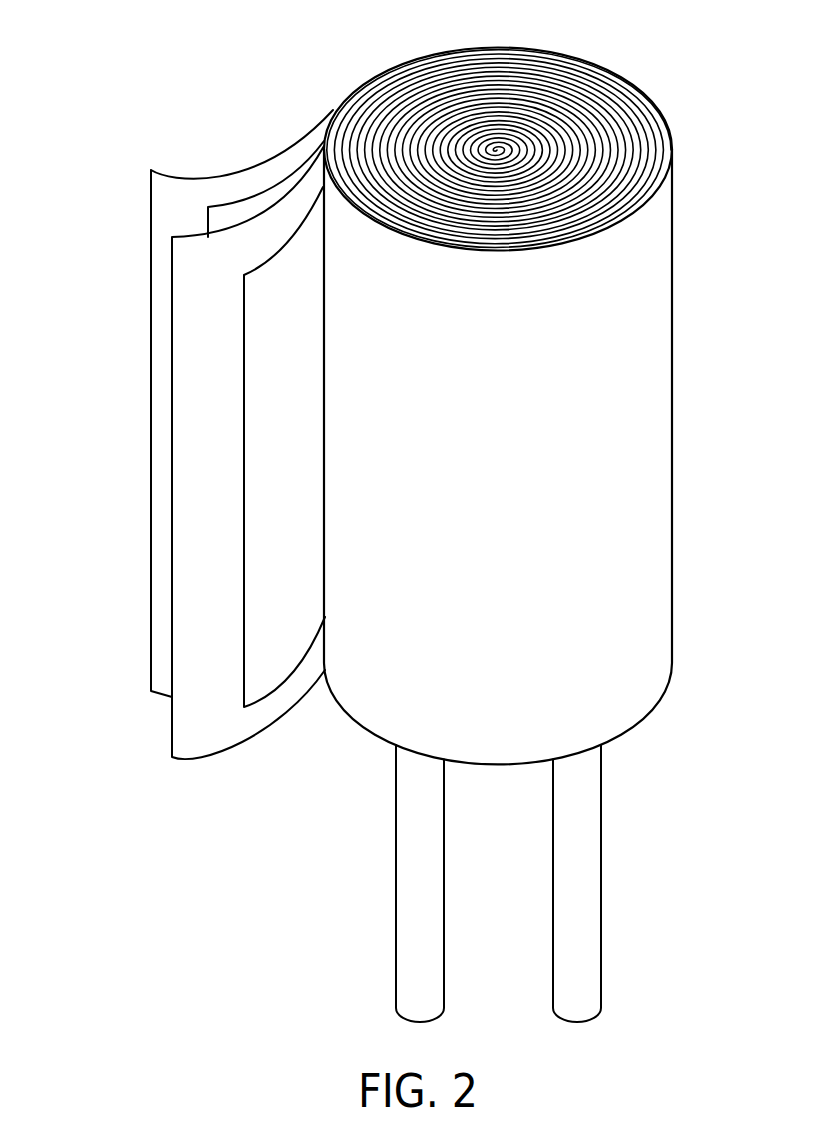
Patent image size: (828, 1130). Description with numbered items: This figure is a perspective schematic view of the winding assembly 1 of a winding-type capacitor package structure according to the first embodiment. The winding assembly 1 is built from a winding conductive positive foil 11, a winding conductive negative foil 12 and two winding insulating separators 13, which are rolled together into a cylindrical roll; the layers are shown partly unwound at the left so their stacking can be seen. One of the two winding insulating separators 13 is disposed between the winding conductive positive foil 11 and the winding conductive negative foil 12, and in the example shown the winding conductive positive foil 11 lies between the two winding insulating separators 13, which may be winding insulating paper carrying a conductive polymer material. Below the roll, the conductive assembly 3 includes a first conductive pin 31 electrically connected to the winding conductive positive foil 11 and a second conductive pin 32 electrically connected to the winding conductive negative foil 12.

The winding assembly 1 is at (405, 70).
The winding conductive positive foil 11 is at (227, 218).
The winding conductive negative foil 12 is at (285, 275).
The winding insulating separator 13 is at (202, 293).
The conductive assembly 3 is at (437, 883).
The first conductive pin 31 is at (420, 830).
The second conductive pin 32 is at (575, 912).